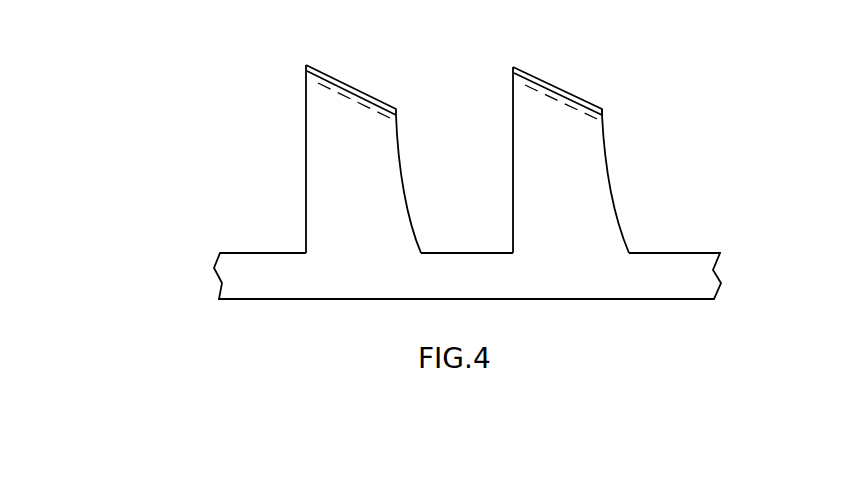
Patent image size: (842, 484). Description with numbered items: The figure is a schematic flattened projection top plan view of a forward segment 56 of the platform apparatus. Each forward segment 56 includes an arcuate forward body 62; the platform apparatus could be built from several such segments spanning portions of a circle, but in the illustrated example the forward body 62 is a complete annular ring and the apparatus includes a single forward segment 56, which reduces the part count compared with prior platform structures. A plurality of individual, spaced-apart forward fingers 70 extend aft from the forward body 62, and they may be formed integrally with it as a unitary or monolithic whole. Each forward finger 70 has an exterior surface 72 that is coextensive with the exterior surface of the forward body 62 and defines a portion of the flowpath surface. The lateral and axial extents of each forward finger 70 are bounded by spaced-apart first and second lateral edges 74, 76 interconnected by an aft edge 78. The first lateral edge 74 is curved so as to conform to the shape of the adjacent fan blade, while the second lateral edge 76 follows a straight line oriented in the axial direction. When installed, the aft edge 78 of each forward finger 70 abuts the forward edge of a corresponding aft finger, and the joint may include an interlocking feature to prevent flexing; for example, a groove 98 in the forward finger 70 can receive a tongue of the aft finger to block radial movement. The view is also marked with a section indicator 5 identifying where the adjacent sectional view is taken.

The section line for FIG. 5 is at (147, 58).
The forward segment 56 is at (579, 321).
The forward body 62 is at (288, 294).
The exterior surface 72 is at (461, 142).
The first lateral edge 74 is at (400, 157).
The second lateral edge 76 is at (306, 168).
The aft edge 78 is at (342, 80).
The forward finger 70 is at (352, 113).
The groove 98 is at (601, 109).